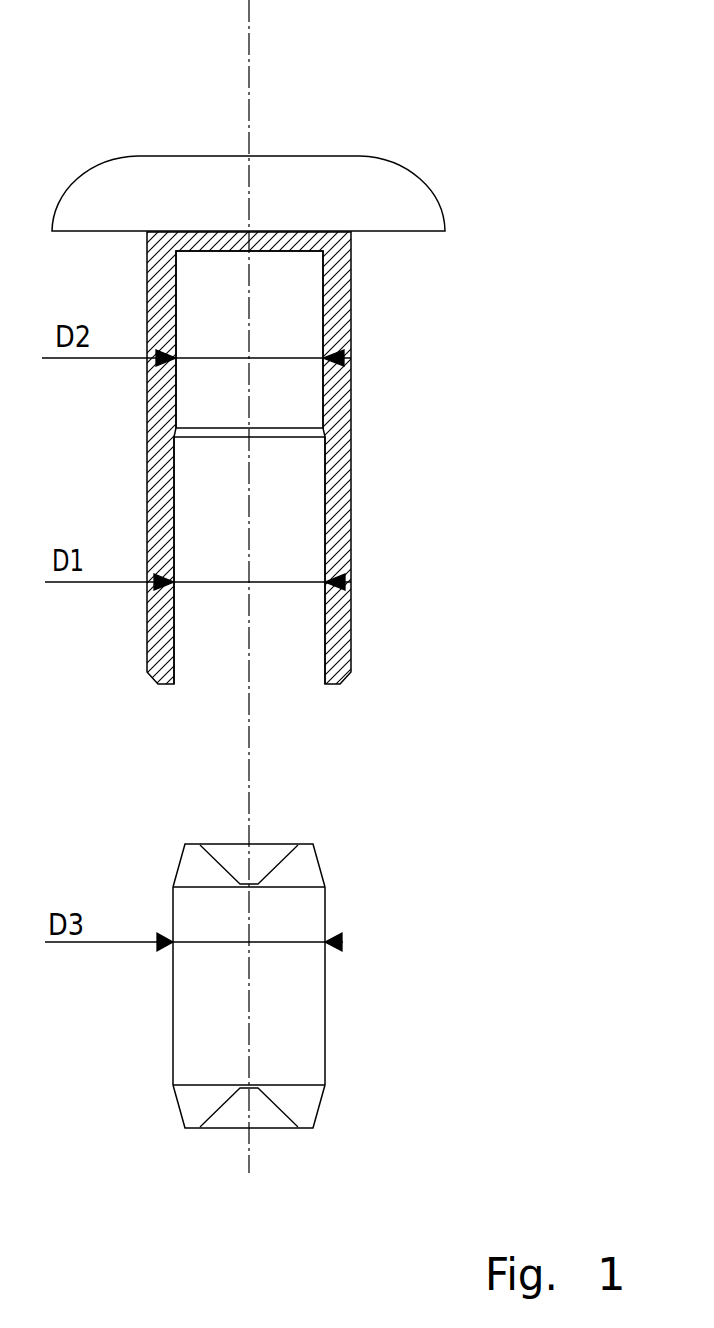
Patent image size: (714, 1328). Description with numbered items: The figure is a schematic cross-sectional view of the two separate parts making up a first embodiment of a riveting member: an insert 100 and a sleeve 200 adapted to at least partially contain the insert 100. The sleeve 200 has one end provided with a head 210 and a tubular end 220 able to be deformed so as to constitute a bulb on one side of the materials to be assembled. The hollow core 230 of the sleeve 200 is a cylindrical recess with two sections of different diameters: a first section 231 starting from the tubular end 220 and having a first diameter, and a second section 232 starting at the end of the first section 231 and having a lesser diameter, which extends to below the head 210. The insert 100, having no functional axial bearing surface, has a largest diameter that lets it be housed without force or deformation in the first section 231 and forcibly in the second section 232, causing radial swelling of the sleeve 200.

The insert 100 is at (395, 1010).
The sleeve 200 is at (428, 418).
The head 210 is at (407, 187).
The tubular end 220 is at (342, 650).
The hollow core 230 is at (298, 540).
The first section 231 is at (298, 615).
The second section 232 is at (298, 377).